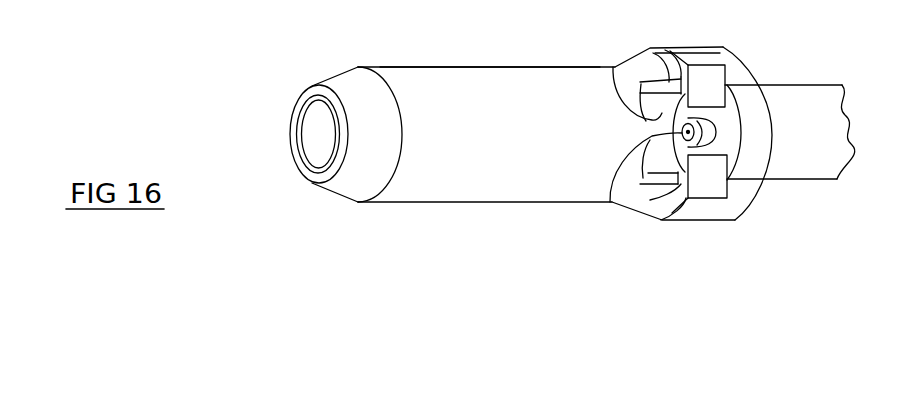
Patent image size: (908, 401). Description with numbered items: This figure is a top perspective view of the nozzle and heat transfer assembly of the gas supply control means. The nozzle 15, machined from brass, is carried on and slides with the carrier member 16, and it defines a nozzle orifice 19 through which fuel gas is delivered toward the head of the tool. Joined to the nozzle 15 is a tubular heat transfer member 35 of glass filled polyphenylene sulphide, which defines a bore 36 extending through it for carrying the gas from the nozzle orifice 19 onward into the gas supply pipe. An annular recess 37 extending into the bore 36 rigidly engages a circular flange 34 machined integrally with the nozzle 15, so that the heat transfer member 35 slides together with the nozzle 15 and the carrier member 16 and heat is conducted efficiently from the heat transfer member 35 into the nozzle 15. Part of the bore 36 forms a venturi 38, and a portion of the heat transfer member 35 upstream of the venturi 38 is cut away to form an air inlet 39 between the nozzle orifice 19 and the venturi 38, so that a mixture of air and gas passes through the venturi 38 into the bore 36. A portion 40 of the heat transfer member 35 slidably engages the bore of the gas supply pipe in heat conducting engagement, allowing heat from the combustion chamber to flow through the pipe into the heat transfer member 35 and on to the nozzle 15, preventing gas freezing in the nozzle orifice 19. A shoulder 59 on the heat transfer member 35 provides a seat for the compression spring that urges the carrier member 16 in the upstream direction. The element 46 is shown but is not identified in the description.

The nozzle 15 is at (708, 150).
The carrier member 16 is at (838, 106).
The nozzle orifice 19 is at (620, 198).
The circular flange 34 is at (750, 87).
The tubular heat transfer member 35 is at (448, 190).
The bore 36 is at (310, 138).
The annular recess 37 is at (748, 175).
The venturi 38 is at (620, 74).
The air inlet 39 is at (718, 84).
The portion of the heat transfer member 40 is at (433, 78).
The shaft end 46 is at (833, 167).
The shoulder 59 is at (654, 212).